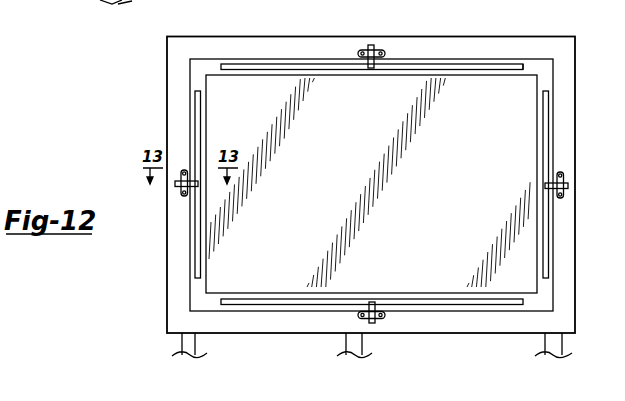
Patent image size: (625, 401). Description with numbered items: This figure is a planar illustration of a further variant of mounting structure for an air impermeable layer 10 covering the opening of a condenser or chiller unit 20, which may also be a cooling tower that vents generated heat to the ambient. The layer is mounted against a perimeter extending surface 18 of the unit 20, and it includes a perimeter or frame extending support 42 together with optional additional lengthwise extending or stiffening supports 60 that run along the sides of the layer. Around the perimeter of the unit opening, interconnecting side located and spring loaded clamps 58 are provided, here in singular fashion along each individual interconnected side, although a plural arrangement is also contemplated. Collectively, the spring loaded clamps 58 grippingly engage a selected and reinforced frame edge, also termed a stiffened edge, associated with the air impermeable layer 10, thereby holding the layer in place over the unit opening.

The air impermeable layer 10 is at (383, 253).
The perimeter extending surface 18 is at (167, 50).
The condenser or chiller unit 20 is at (167, 86).
The perimeter/frame extending support 42 is at (538, 66).
The spring loaded clamps 58 is at (364, 48).
The lengthwise extending or stiffening supports 60 is at (197, 120).